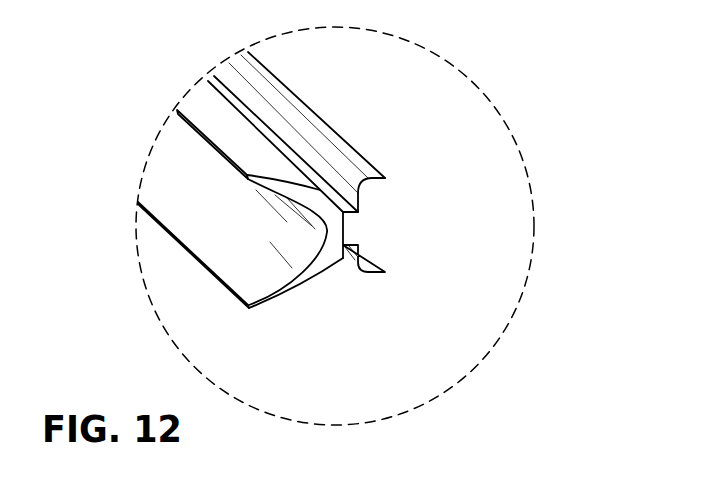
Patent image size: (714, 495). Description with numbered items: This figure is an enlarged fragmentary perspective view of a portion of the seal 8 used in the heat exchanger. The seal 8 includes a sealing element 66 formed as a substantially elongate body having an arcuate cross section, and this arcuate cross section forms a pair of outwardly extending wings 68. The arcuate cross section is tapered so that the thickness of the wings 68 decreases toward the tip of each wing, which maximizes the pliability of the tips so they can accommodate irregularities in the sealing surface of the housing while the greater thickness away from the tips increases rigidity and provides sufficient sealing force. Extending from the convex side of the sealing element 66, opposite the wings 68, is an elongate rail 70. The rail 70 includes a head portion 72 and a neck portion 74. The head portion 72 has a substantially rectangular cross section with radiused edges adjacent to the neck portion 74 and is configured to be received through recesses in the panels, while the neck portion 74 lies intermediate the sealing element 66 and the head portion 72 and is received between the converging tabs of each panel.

The seal 8 is at (278, 183).
The sealing element 66 is at (220, 281).
The wings 68 is at (152, 213).
The rail 70 is at (347, 142).
The head portion 72 is at (386, 228).
The neck portion 74 is at (347, 253).